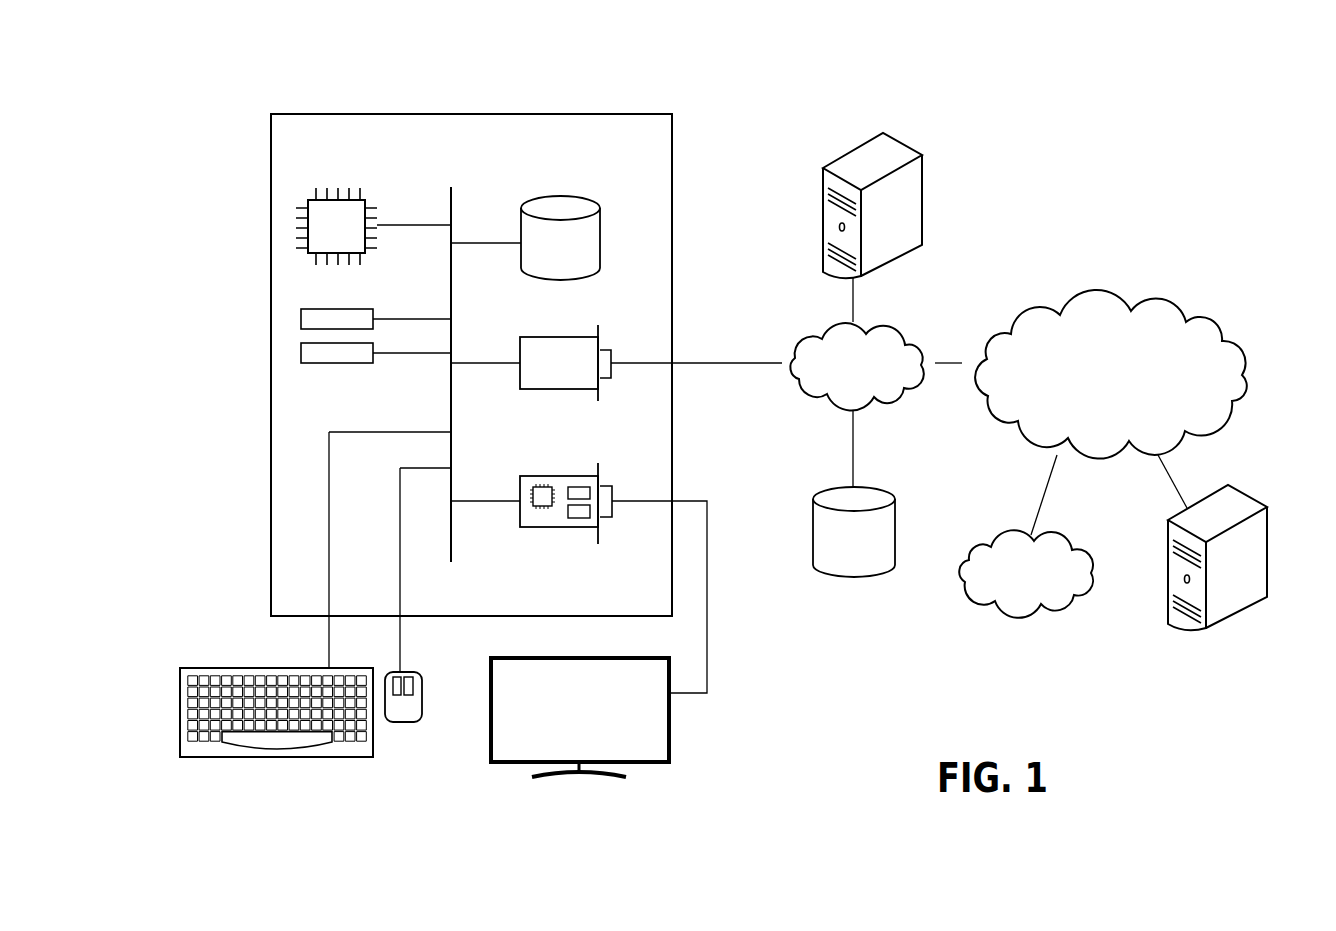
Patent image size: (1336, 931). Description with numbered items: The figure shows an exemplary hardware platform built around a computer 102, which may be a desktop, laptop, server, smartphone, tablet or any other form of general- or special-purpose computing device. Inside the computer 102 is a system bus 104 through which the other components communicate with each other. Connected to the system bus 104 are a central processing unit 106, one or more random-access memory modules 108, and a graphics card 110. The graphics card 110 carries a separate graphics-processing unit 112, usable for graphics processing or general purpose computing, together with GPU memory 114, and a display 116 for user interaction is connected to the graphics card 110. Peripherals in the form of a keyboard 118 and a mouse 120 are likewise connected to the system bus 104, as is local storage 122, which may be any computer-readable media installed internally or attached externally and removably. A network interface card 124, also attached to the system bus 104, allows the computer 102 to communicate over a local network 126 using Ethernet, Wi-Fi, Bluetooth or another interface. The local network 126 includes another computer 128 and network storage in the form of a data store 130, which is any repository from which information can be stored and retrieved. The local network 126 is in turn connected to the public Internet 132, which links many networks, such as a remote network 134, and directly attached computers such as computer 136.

The computer 102 is at (626, 113).
The system bus 104 is at (453, 197).
The central processing unit 106 is at (362, 197).
The random-access memory modules 108 is at (374, 349).
The graphics card 110 is at (518, 486).
The graphics-processing unit 112 is at (541, 503).
The GPU memory 114 is at (576, 518).
The display 116 is at (672, 744).
The keyboard 118 is at (277, 757).
The mouse 120 is at (400, 722).
The local storage 122 is at (601, 225).
The network interface card 124 is at (518, 348).
The local network 126 is at (905, 325).
The computer 128 is at (905, 143).
The data store 130 is at (887, 490).
The public Internet 132 is at (1155, 285).
The remote network 134 is at (1080, 530).
The computer 136 is at (1245, 490).